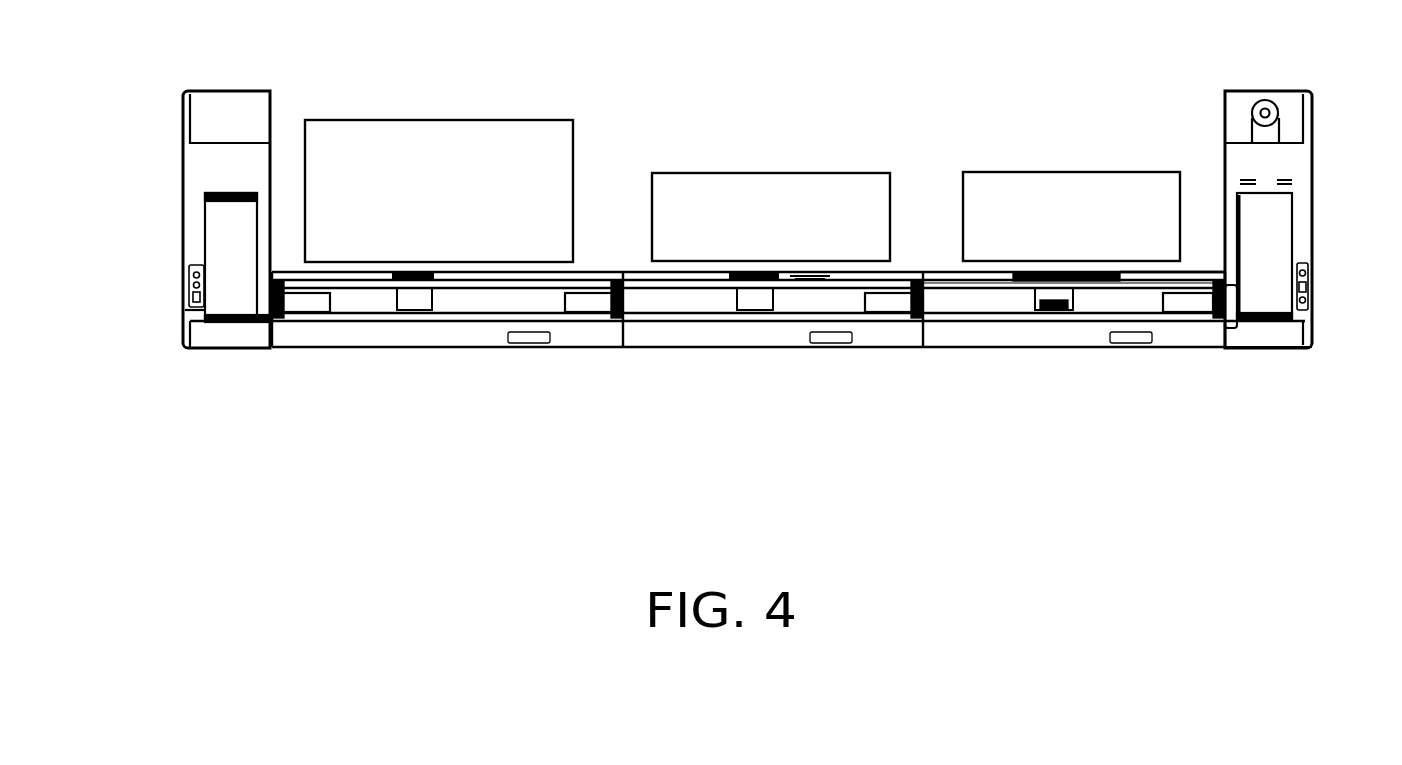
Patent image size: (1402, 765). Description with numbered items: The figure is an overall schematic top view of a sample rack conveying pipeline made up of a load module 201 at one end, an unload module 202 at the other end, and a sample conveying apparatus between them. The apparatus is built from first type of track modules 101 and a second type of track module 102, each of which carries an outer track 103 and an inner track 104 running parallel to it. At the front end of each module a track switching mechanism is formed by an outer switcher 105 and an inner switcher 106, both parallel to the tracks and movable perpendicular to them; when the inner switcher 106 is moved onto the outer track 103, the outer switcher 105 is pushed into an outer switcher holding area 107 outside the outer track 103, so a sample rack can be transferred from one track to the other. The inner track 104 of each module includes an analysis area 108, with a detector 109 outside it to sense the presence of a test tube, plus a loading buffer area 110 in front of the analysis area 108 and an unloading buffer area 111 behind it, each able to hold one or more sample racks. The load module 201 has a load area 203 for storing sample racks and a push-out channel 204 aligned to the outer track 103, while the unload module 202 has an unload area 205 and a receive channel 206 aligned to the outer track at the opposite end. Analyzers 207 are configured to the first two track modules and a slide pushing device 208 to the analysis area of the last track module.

The first type of track module 101 is at (883, 338).
The second type of track module 102 is at (583, 333).
The outer track 103 is at (418, 313).
The inner track 104 is at (475, 288).
The outer switcher 105 is at (1180, 317).
The inner switcher 106 is at (1178, 285).
The outer switcher holding area 107 is at (1208, 332).
The analysis area 108 is at (1047, 275).
The detector 109 is at (1063, 312).
The loading buffer area 110 is at (1132, 290).
The unloading buffer area 111 is at (953, 283).
The load module 201 is at (1263, 337).
The unload module 202 is at (232, 333).
The load area 203 is at (1268, 222).
The push-out channel 204 is at (1265, 308).
The unload area 205 is at (232, 229).
The receive channel 206 is at (233, 307).
The analyzer 207 is at (1005, 173).
The slide pushing device 208 is at (808, 173).